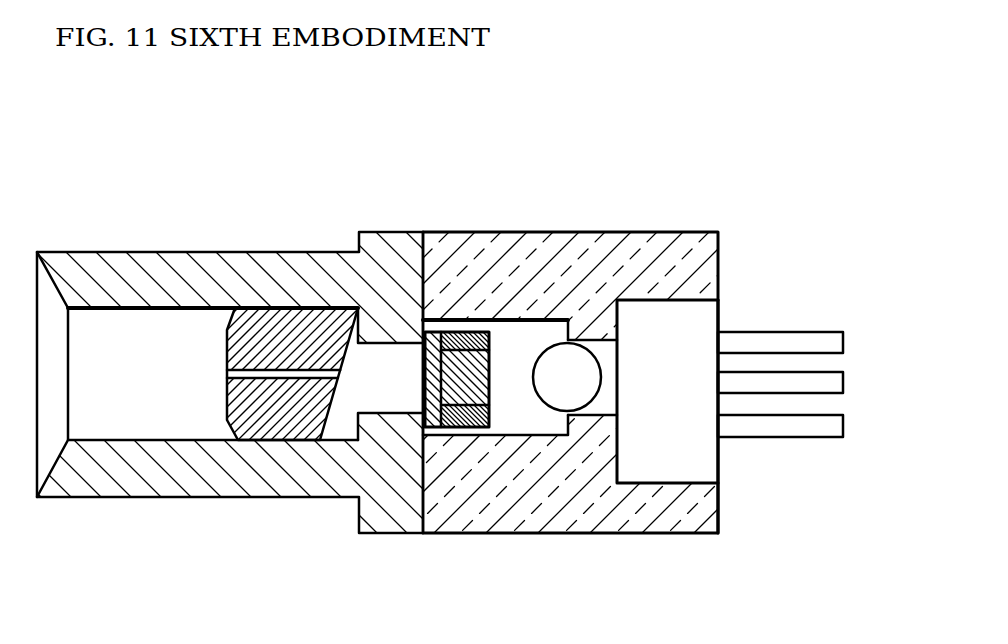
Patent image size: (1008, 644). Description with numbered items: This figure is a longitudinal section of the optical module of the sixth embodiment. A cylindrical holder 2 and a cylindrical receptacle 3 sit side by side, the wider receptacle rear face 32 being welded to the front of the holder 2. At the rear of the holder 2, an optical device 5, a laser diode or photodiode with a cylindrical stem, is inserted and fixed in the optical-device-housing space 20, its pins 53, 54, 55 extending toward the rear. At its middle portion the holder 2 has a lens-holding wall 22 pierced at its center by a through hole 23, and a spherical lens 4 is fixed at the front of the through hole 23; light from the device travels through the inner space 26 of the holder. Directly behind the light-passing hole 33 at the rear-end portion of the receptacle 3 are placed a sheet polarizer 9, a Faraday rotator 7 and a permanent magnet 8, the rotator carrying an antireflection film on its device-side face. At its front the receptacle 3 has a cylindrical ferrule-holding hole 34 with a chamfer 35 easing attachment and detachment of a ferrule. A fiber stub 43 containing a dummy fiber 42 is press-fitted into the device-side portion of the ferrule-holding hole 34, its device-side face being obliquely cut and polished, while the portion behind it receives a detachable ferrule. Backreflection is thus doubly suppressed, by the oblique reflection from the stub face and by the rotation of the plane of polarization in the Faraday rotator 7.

The holder 2 is at (586, 246).
The receptacle 3 is at (187, 485).
The spherical lens 4 is at (560, 392).
The optical device 5 is at (703, 467).
The Faraday rotator 7 is at (462, 425).
The permanent magnet 8 is at (468, 340).
The sheet polarizer 9 is at (450, 405).
The optical-device-housing space 20 is at (660, 298).
The lens-holding wall 22 is at (600, 418).
The through hole 23 is at (608, 398).
The inner space 26 is at (512, 343).
The receptacle rear face 32 is at (385, 430).
The light-passing hole 33 is at (343, 485).
The ferrule-holding hole 34 is at (167, 332).
The chamfer 35 is at (60, 487).
The dummy fiber 42 is at (262, 376).
The fiber stub 43 is at (303, 333).
The pin 53 is at (823, 337).
The pin 54 is at (834, 383).
The pin 55 is at (834, 427).